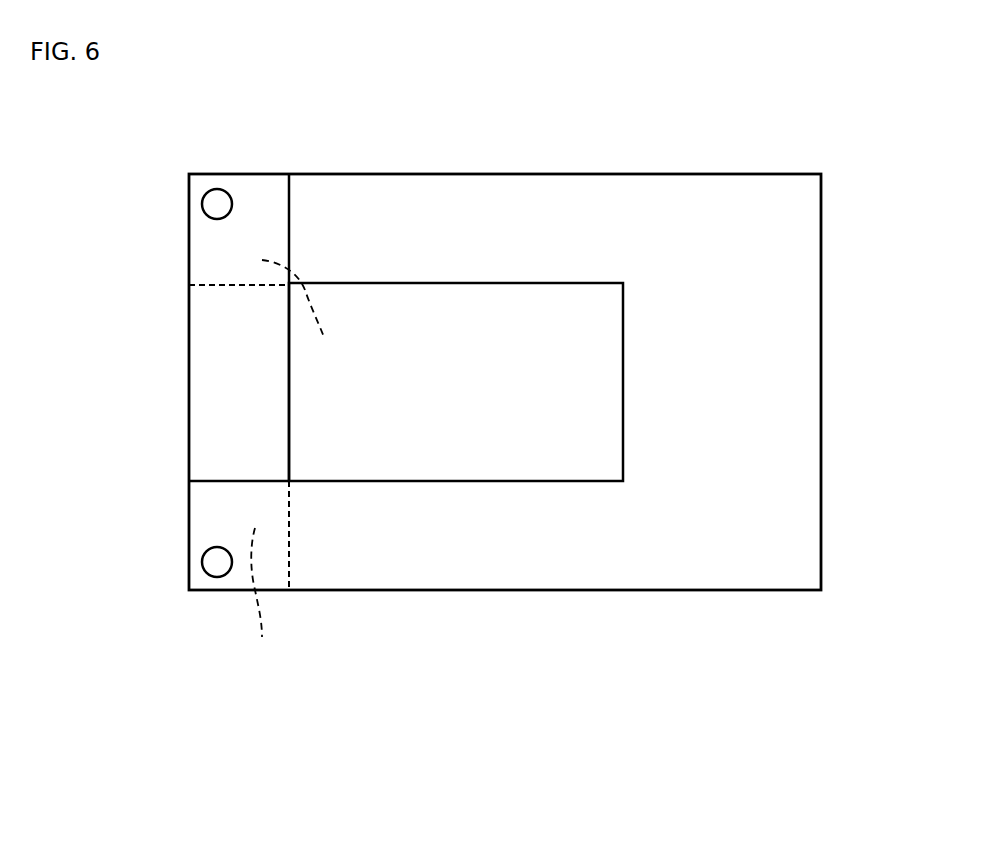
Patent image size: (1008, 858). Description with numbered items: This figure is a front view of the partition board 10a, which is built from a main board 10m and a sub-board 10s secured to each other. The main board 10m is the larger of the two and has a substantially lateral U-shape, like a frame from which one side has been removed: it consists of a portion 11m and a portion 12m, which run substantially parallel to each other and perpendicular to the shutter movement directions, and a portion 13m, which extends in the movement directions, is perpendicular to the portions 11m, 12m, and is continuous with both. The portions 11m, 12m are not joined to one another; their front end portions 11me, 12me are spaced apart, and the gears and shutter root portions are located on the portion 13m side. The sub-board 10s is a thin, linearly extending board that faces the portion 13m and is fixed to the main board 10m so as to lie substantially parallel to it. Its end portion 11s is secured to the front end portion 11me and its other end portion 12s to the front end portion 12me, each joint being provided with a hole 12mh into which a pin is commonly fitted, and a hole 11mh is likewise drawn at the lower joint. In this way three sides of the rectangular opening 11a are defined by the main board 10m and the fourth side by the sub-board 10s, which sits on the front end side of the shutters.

The main board 10m is at (598, 572).
The partition board 10a is at (706, 590).
The sub-board 10s is at (218, 372).
The portion 11m is at (440, 545).
The opening 11a is at (490, 480).
The end portion 11s is at (262, 602).
The front end portion 11me is at (255, 502).
The hole of second mask 11mh is at (222, 562).
The portion 12m is at (480, 252).
The other end portion 12s is at (218, 262).
The front end portion 12me is at (314, 317).
The hole 12mh is at (214, 204).
The portion 13m is at (783, 367).